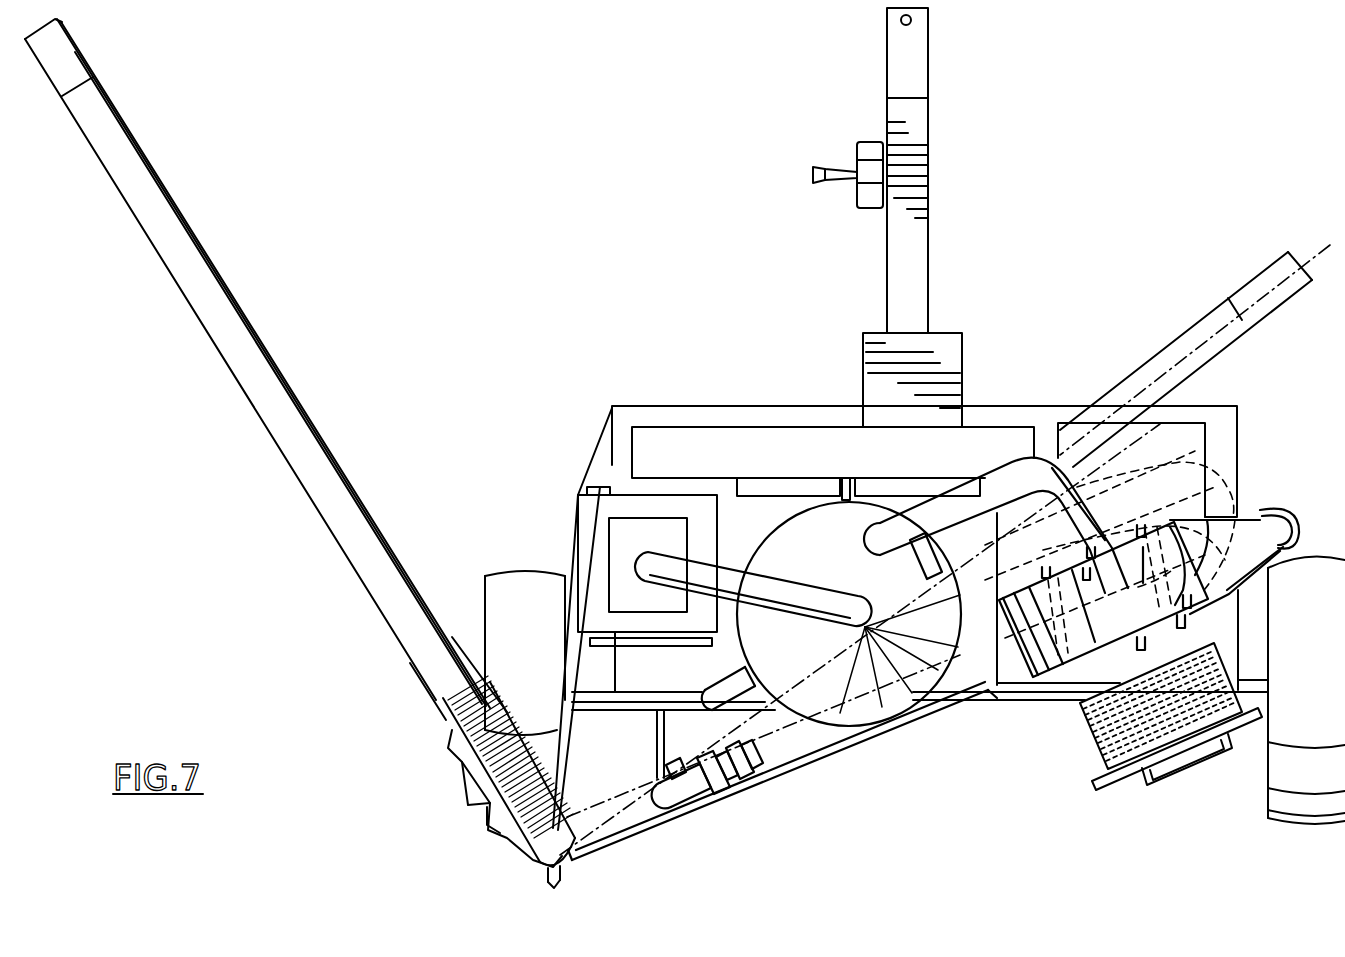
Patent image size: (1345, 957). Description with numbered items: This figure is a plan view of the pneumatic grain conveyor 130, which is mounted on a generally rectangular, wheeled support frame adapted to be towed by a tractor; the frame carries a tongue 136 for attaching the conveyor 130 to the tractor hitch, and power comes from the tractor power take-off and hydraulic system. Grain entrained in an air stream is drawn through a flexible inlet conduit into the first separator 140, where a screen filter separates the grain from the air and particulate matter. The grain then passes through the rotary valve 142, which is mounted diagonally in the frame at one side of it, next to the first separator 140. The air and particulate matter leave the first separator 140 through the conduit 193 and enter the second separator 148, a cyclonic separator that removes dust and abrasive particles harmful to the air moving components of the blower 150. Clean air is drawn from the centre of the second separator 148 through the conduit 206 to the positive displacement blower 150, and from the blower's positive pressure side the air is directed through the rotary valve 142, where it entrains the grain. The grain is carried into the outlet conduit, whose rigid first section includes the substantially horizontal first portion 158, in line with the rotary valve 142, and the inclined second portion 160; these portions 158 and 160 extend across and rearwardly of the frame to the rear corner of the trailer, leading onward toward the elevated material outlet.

The conveyor 130 is at (1142, 128).
The tongue 136 is at (930, 55).
The first separator 140 is at (1251, 518).
The rotary valve 142 is at (1057, 672).
The second separator 148 is at (831, 553).
The blower 150 is at (585, 527).
The first portion 158 is at (813, 737).
The second portion 160 is at (667, 805).
The conduit 193 is at (1023, 473).
The conduit 206 is at (800, 598).